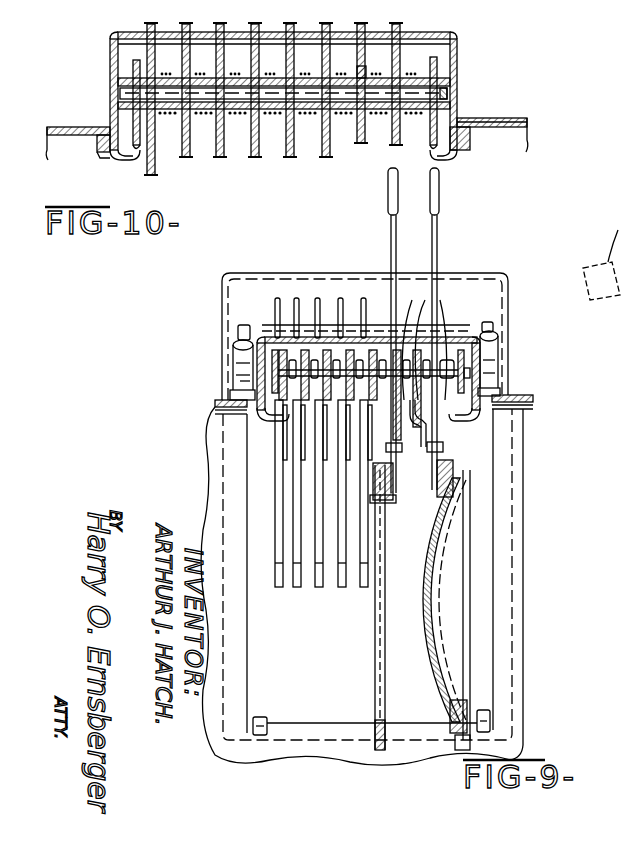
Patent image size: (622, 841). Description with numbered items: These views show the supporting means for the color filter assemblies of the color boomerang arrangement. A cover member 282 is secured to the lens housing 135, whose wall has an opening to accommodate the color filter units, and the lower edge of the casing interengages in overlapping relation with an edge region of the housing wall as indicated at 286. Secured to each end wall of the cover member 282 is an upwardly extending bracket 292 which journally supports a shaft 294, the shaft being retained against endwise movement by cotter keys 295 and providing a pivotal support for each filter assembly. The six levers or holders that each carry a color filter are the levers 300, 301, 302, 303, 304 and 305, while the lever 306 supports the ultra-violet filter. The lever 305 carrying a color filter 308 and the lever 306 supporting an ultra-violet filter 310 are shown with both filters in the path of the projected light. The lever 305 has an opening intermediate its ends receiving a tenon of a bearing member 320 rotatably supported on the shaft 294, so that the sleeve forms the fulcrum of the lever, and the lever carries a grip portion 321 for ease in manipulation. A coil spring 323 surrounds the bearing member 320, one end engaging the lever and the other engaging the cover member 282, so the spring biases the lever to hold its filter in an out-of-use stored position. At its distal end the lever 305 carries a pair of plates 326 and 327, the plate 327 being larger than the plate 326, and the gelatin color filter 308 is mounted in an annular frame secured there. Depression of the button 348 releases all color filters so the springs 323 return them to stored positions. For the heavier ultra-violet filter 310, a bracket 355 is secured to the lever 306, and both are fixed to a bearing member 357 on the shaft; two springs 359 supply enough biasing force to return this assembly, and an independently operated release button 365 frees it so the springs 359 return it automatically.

In FIG. 10, the lens housing 135 is at (517, 123).
In FIG. 9, the lens housing 135 is at (518, 396).
In FIG. 10, the cover member 282 is at (458, 45).
In FIG. 9, the cover member 282 is at (480, 362).
In FIG. 9, the overlapping interengagement 286 is at (497, 713).
In FIG. 10, the bracket 292 is at (133, 127).
In FIG. 9, the bracket 292 is at (268, 420).
In FIG. 10, the shaft 294 is at (140, 92).
In FIG. 9, the shaft 294 is at (272, 373).
In FIG. 10, the cotter key 295 is at (127, 80).
In FIG. 10, the lever 300 is at (146, 162).
In FIG. 9, the lever 300 is at (281, 442).
In FIG. 10, the lever 301 is at (181, 160).
In FIG. 9, the lever 301 is at (299, 442).
In FIG. 10, the lever 302 is at (214, 160).
In FIG. 9, the lever 302 is at (321, 442).
In FIG. 10, the lever 303 is at (262, 158).
In FIG. 9, the lever 303 is at (344, 442).
In FIG. 10, the lever 304 is at (285, 160).
In FIG. 9, the lever 304 is at (366, 442).
In FIG. 10, the lever 305 is at (322, 160).
In FIG. 9, the lever 305 is at (391, 226).
In FIG. 10, the lever 306 is at (402, 47).
In FIG. 9, the lever 306 is at (440, 225).
In FIG. 9, the color filter 308 is at (383, 562).
In FIG. 9, the ultra-violet filter 310 is at (430, 570).
In FIG. 10, the bearing member 320 is at (343, 112).
In FIG. 9, the grip portion 321 is at (388, 191).
In FIG. 10, the coil spring 323 is at (307, 72).
In FIG. 9, the coil spring 323 is at (390, 345).
In FIG. 9, the plate 326 is at (396, 485).
In FIG. 9, the plate 327 is at (394, 470).
In FIG. 9, the button 348 is at (236, 336).
In FIG. 10, the bracket 355 is at (378, 52).
In FIG. 9, the bracket 355 is at (418, 420).
In FIG. 9, the bearing member 357 is at (420, 360).
In FIG. 9, the spring 359 is at (413, 360).
In FIG. 9, the release button 365 is at (499, 328).